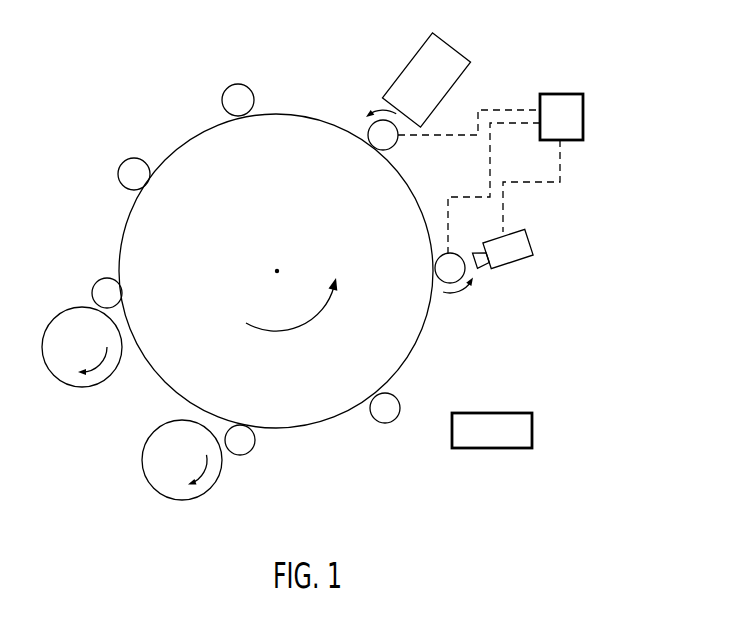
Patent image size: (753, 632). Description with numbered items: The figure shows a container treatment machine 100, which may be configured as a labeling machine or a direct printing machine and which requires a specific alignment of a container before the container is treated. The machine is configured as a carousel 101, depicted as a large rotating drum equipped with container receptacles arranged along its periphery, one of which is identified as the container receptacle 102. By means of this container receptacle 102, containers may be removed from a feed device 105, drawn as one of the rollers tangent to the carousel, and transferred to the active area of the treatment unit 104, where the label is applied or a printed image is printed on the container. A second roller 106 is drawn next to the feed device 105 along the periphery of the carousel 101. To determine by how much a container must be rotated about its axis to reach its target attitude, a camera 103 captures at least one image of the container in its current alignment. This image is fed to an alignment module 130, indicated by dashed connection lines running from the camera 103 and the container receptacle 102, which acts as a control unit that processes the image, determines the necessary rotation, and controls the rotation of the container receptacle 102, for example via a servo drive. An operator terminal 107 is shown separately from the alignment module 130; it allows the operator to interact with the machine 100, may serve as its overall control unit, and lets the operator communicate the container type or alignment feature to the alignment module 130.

The container treatment machine 100 is at (156, 61).
The carousel 101 is at (408, 345).
The container receptacle 102 is at (458, 259).
The camera 103 is at (536, 242).
The treatment unit 104 is at (412, 56).
The feed device 105 is at (168, 500).
The roller 106 is at (70, 388).
The operator terminal 107 is at (517, 412).
The alignment module 130 is at (584, 105).